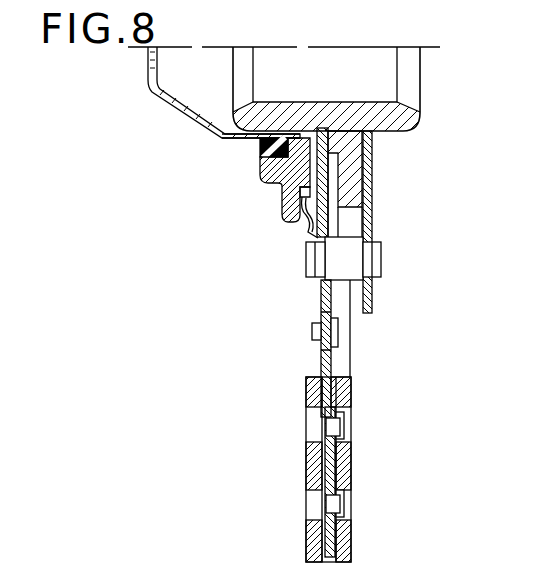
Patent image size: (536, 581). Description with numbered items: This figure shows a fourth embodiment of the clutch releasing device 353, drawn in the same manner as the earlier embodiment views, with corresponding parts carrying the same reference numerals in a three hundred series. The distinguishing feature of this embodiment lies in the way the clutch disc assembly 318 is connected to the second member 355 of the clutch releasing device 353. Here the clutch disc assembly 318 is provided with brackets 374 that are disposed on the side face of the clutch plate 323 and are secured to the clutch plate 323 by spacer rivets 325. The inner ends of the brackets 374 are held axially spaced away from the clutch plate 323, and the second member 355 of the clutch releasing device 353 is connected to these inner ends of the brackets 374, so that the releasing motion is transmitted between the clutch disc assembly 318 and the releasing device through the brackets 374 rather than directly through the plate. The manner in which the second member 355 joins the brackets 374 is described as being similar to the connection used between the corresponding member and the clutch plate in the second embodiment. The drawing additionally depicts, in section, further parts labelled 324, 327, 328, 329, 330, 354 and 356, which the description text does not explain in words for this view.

The clutch disc assembly 318 is at (374, 136).
The clutch plate 323 is at (318, 305).
The guide tube 324 is at (373, 196).
The spacer rivets 325 is at (355, 262).
The outer tube 327 is at (350, 460).
The stop ring 328 is at (314, 328).
The bearing housing 329 is at (314, 460).
The spindle 330 is at (335, 472).
The clutch releasing device 353 is at (235, 143).
The bracket 354 is at (193, 118).
The second member 355 is at (284, 172).
The seal 356 is at (262, 158).
The brackets 374 is at (306, 216).